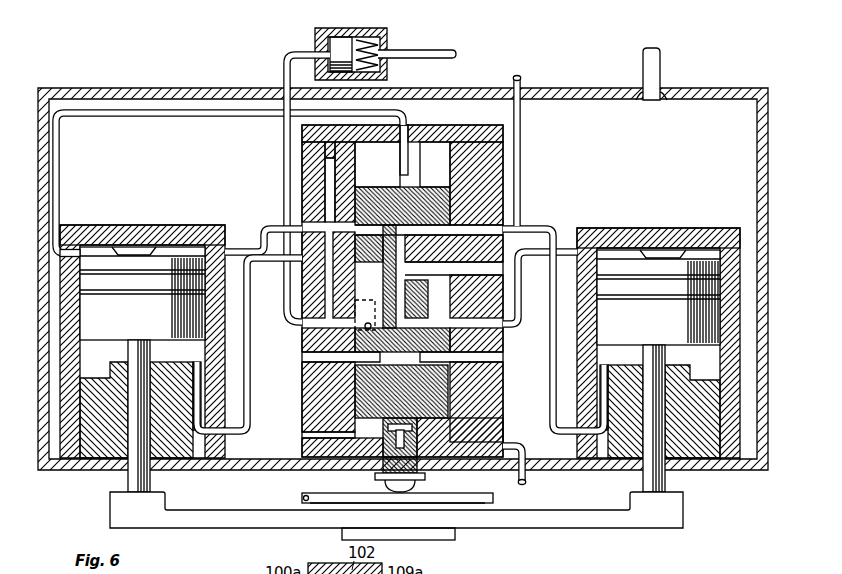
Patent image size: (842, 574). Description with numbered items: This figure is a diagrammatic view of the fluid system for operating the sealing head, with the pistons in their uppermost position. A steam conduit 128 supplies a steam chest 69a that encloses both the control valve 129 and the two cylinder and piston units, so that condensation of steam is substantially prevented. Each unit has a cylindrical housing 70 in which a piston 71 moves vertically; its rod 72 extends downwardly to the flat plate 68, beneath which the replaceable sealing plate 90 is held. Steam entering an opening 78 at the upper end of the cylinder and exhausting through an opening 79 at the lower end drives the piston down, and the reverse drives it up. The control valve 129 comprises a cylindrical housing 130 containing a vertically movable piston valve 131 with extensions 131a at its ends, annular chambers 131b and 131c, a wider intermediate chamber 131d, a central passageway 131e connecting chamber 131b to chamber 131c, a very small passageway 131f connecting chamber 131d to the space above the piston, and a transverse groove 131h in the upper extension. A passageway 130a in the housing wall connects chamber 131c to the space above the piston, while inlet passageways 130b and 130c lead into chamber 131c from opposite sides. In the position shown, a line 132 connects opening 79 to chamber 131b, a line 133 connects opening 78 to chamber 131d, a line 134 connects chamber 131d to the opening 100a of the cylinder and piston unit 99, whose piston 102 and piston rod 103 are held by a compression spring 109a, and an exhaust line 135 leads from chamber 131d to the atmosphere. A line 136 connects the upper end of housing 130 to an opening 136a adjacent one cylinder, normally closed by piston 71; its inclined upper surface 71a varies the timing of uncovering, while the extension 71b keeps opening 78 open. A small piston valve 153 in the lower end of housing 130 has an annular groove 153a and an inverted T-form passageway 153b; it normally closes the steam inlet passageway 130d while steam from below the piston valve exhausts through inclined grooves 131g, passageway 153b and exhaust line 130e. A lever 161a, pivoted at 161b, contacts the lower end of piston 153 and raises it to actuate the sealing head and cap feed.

The steam chest 69a is at (722, 90).
The steam conduit 128 is at (652, 65).
The cylinder and piston unit 99 is at (380, 31).
The opening 100a is at (320, 50).
The piston 102 is at (343, 45).
The piston rod 103 is at (440, 58).
The compression spring 109a is at (372, 58).
The line 136 is at (192, 115).
The opening 136a is at (68, 249).
The line 134 is at (283, 137).
The exhaust line 135 is at (521, 118).
The control valve 129 is at (504, 137).
The cylindrical housing 130 is at (480, 160).
The passageway 130a is at (328, 180).
The inlet passageway 130b is at (320, 352).
The inlet passageway 130c is at (478, 358).
The steam inlet passageway 130d is at (318, 436).
The exhaust line 130e is at (520, 482).
The piston valve 131 is at (452, 190).
The extensions 131a is at (440, 186).
The annular chamber 131b is at (470, 213).
The annular chamber 131c is at (428, 373).
The intermediate chamber 131d is at (432, 320).
The passageway 131e is at (410, 275).
The passageway 131f is at (383, 200).
The inclined grooves 131g is at (442, 380).
The transverse groove 131h is at (412, 172).
The line 132 is at (247, 383).
The line 133 is at (262, 240).
The cylindrical housing 70 is at (62, 304).
The piston 71 is at (100, 275).
The inclined upper surface 71a is at (120, 250).
The extension 71b is at (140, 252).
The piston rod 72 is at (130, 477).
The opening 78 is at (210, 236).
The opening 79 is at (213, 436).
The flat plate 68 is at (243, 515).
The sealing plate 90 is at (430, 532).
The small piston valve 153 is at (422, 478).
The annular groove 153a is at (393, 472).
The passageway 153b is at (432, 417).
The lever 161a is at (323, 504).
The pivot 161b is at (302, 497).